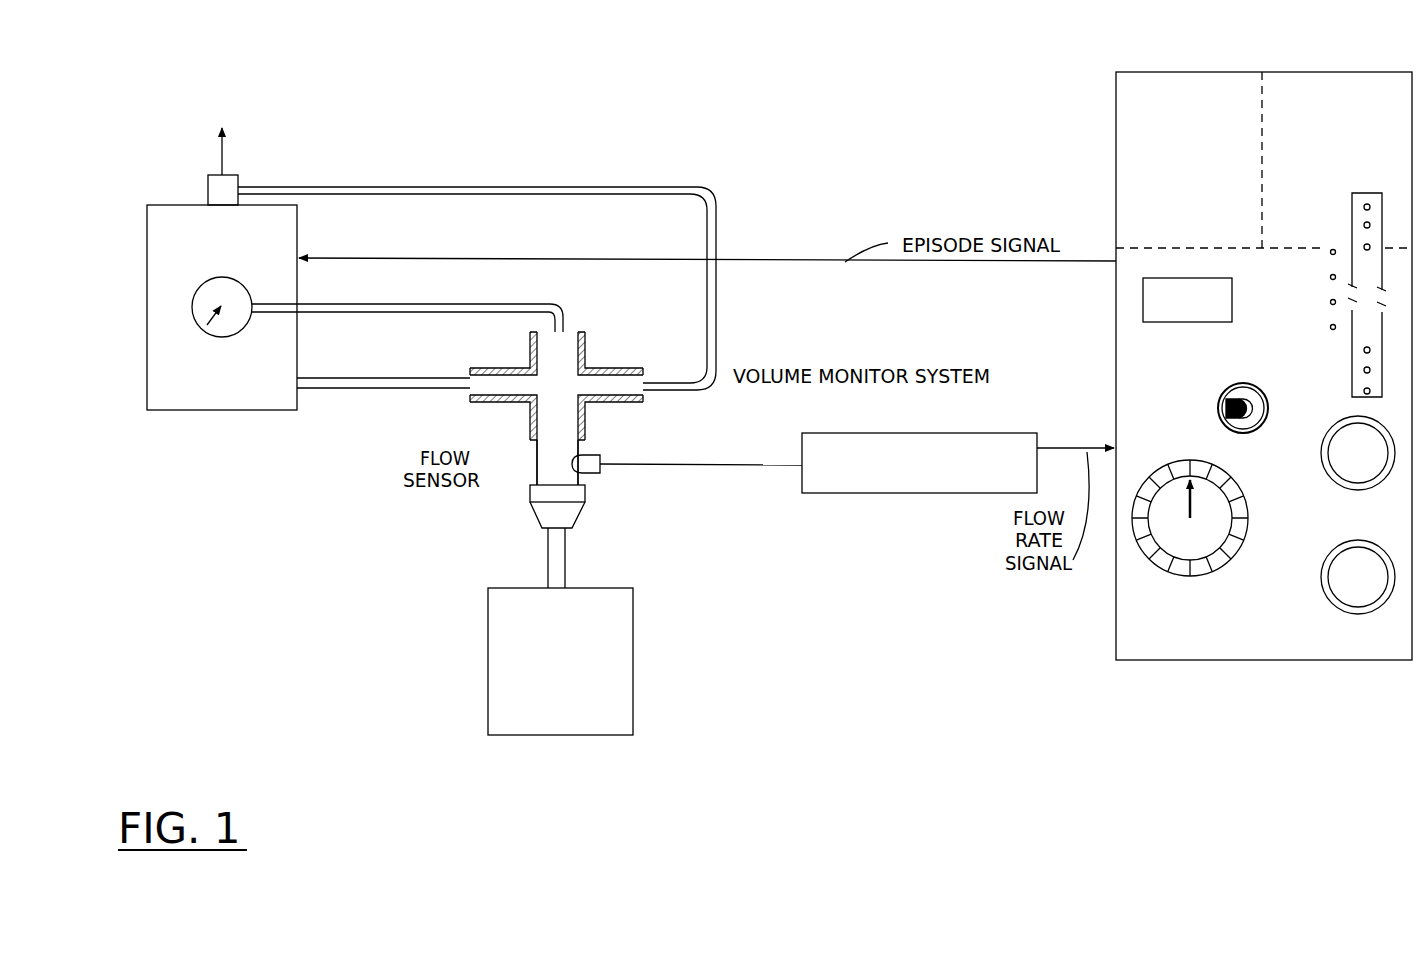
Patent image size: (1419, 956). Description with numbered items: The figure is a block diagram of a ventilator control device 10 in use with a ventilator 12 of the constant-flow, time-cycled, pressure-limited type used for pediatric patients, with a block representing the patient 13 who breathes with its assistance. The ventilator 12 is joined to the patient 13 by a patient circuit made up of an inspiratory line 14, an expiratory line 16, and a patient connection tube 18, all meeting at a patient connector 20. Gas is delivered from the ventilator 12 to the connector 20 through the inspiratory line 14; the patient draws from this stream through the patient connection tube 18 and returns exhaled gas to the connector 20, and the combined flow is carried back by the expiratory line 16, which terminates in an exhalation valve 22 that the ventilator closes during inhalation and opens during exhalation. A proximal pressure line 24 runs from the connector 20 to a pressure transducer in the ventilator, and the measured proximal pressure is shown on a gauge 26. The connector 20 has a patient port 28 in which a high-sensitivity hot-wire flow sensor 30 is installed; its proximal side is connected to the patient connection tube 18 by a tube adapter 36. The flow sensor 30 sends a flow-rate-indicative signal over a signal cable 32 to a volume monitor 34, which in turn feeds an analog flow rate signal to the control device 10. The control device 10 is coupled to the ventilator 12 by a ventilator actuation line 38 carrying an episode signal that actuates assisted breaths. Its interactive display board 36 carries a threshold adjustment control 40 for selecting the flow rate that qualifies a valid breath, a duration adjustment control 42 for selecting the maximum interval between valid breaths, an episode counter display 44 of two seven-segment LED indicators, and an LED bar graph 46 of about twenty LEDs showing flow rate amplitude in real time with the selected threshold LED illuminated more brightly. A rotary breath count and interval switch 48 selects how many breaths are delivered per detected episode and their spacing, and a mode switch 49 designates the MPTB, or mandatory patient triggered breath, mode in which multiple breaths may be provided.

The ventilator control device 10 is at (1170, 60).
The ventilator 12 is at (193, 411).
The patient 13 is at (560, 661).
The inspiratory line 14 is at (320, 378).
The expiratory line 16 is at (478, 188).
The patient connection tube 18 is at (567, 585).
The patient connector 20 is at (537, 404).
The exhalation valve 22 is at (208, 190).
The proximal pressure line 24 is at (347, 304).
The gauge 26 is at (219, 279).
The patient port 28 is at (571, 420).
The flow sensor 30 is at (543, 471).
The signal cable 32 is at (690, 462).
The volume monitor 34 is at (923, 484).
The display board 36 is at (576, 491).
The ventilator actuation line 38 is at (562, 258).
The threshold adjustment control 40 is at (1370, 463).
The duration adjustment control 42 is at (1370, 588).
The episode counter display 44 is at (1200, 307).
The LED bar graph 46 is at (1357, 193).
The breath count and interval switch 48 is at (1202, 541).
The mode switch 49 is at (1219, 403).